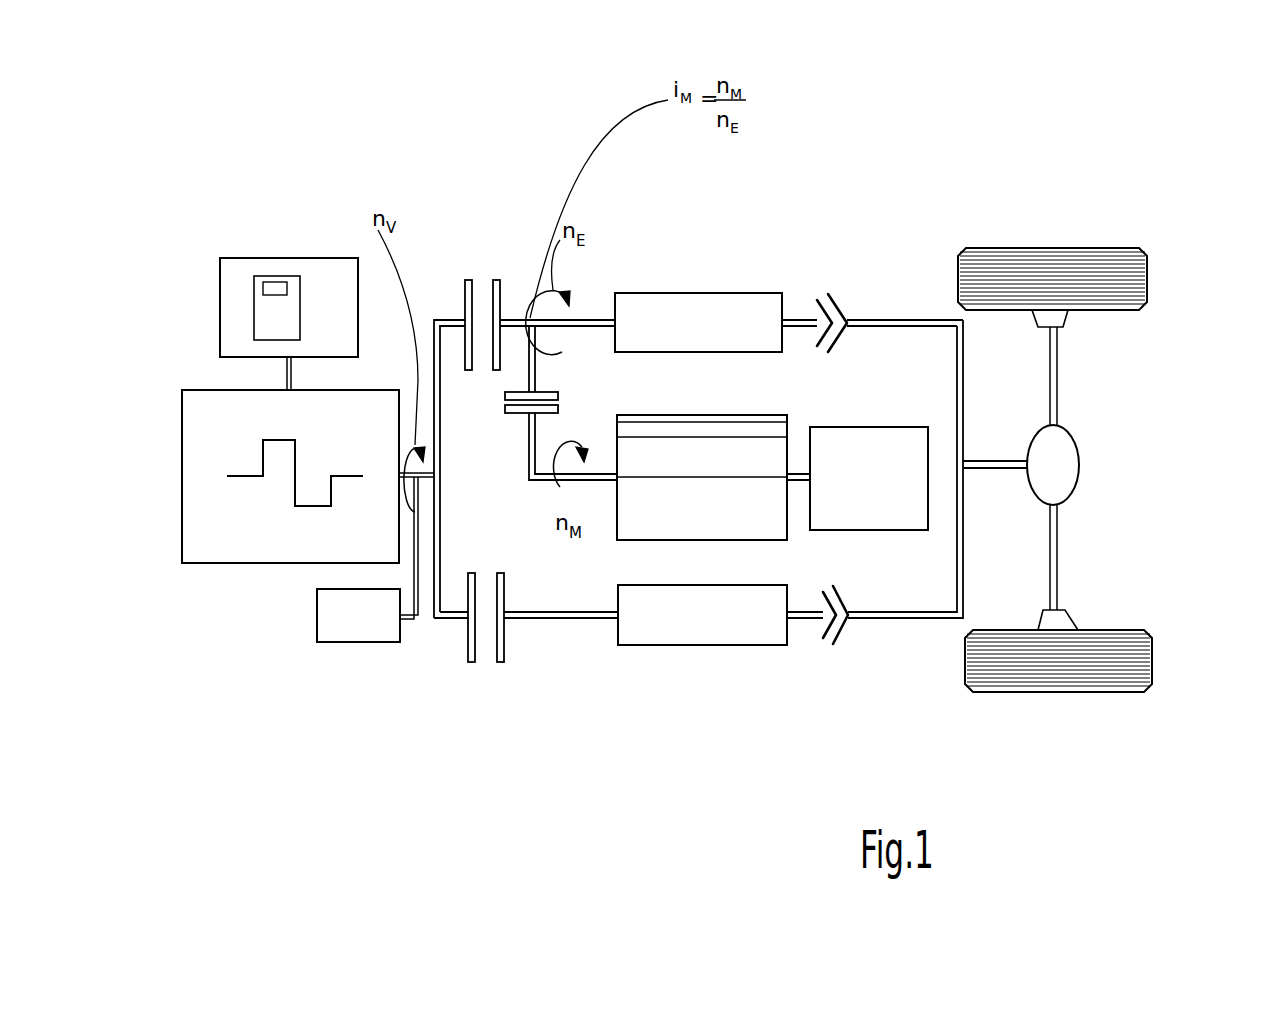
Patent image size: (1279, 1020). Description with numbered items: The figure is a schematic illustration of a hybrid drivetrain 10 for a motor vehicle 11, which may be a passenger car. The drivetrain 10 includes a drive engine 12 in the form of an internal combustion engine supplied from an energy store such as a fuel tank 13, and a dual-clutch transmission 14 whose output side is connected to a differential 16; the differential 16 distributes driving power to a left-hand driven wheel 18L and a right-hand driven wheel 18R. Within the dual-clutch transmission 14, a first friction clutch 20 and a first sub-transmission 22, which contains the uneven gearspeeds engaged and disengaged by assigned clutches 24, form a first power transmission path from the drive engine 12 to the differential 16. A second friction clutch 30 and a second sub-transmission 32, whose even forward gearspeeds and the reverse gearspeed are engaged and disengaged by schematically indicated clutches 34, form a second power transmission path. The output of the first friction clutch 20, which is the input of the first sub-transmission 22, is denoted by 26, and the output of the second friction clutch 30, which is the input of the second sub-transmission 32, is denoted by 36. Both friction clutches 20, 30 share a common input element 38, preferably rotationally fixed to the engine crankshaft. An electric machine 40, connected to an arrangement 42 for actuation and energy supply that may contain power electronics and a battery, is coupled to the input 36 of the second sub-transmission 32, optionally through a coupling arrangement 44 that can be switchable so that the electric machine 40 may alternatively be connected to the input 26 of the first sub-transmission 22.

The drivetrain 10 is at (938, 226).
The motor vehicle 11 is at (1064, 210).
The drive engine 12 is at (238, 557).
The fuel tank 13 is at (252, 268).
The dual-clutch transmission 14 is at (803, 240).
The differential 16 is at (1062, 468).
The right-hand driven wheel 18R is at (1105, 290).
The left-hand driven wheel 18L is at (1110, 655).
The first friction clutch 20 is at (467, 630).
The first sub-transmission 22 is at (690, 645).
The clutches 24 is at (848, 635).
The input of the first sub-transmission 26 is at (570, 630).
The second friction clutch 30 is at (500, 302).
The second sub-transmission 32 is at (692, 293).
The clutches 34 is at (843, 295).
The input of the second sub-transmission 36 is at (580, 306).
The common input element 38 is at (438, 318).
The electric machine 40 is at (712, 428).
The arrangement for actuating and supplying energy 42 is at (855, 457).
The coupling arrangement 44 is at (355, 643).